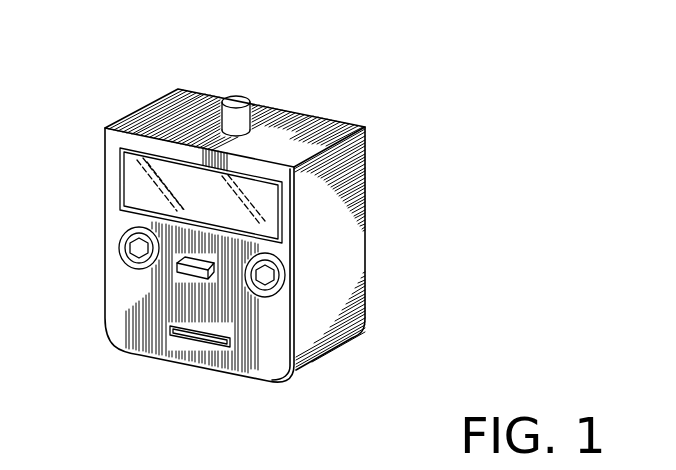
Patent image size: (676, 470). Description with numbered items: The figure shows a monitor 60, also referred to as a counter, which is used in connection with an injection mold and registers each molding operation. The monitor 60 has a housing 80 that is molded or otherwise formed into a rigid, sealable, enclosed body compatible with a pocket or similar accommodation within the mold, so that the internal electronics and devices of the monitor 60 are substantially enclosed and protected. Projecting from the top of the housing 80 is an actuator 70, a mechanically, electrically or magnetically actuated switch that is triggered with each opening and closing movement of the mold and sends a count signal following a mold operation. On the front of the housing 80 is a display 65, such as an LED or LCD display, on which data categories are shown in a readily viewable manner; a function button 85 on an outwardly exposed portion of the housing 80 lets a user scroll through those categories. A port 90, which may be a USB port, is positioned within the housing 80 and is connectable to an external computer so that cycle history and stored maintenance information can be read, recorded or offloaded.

The monitor 60 is at (432, 135).
The display 65 is at (130, 183).
The actuator 70 is at (236, 100).
The housing 80 is at (343, 247).
The button 85 is at (190, 270).
The port 90 is at (232, 346).